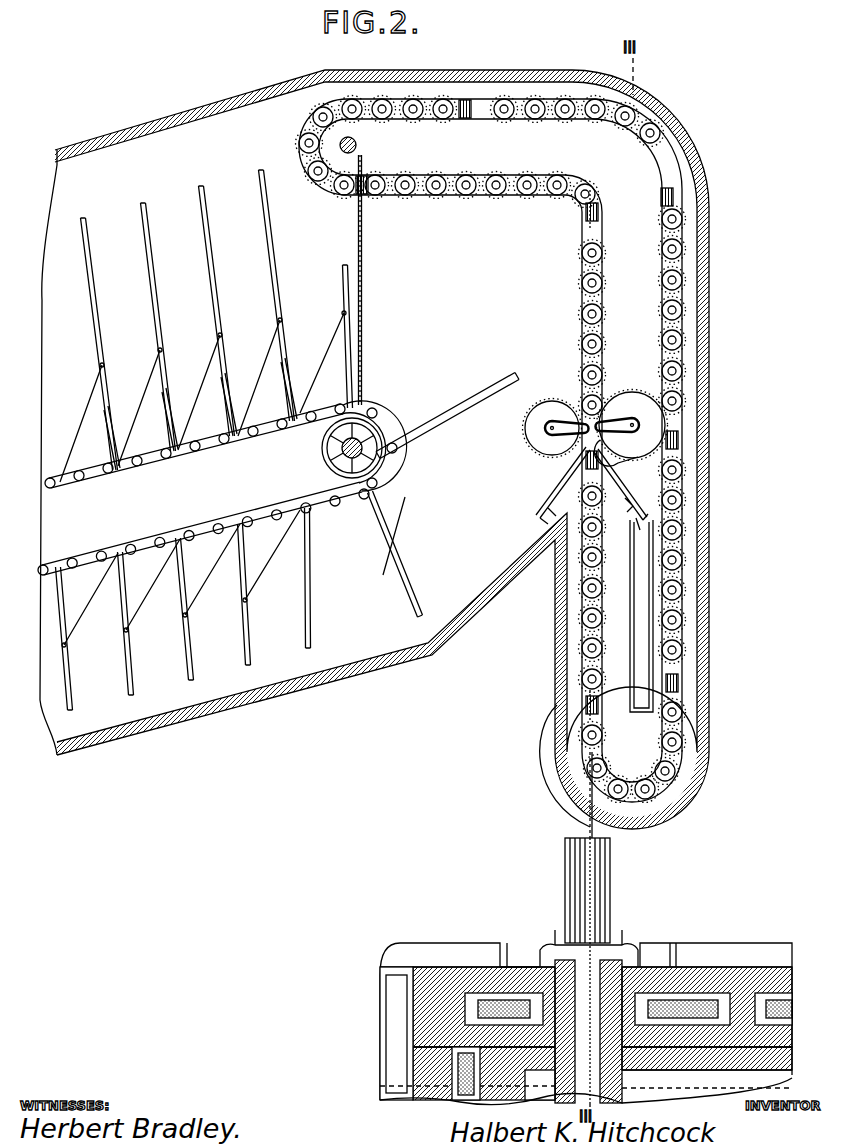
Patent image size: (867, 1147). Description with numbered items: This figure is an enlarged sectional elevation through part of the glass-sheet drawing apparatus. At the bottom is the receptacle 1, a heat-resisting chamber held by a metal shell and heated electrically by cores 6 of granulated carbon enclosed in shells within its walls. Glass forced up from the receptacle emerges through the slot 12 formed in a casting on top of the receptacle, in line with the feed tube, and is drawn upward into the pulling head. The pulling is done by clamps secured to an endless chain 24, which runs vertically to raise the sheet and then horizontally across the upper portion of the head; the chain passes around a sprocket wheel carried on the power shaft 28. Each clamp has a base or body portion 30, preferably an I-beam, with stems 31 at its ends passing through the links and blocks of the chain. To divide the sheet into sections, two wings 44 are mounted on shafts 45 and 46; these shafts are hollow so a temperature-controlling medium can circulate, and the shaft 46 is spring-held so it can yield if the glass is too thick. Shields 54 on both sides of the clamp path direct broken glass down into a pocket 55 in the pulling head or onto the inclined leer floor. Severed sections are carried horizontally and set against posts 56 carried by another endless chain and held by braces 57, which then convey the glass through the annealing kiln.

The chamber or receptacle 1 is at (760, 1083).
The core 6 is at (452, 1080).
The slot 12 is at (612, 940).
The endless chain 24 is at (501, 192).
The power shaft 28 is at (356, 145).
The base or body portion 30 is at (470, 119).
The stem 31 is at (584, 224).
The wing 44 is at (573, 412).
The shaft 45 is at (526, 430).
The shaft 46 is at (639, 417).
The shield 54 is at (556, 489).
The pocket 55 is at (648, 702).
The post 56 is at (344, 285).
The brace 57 is at (338, 318).